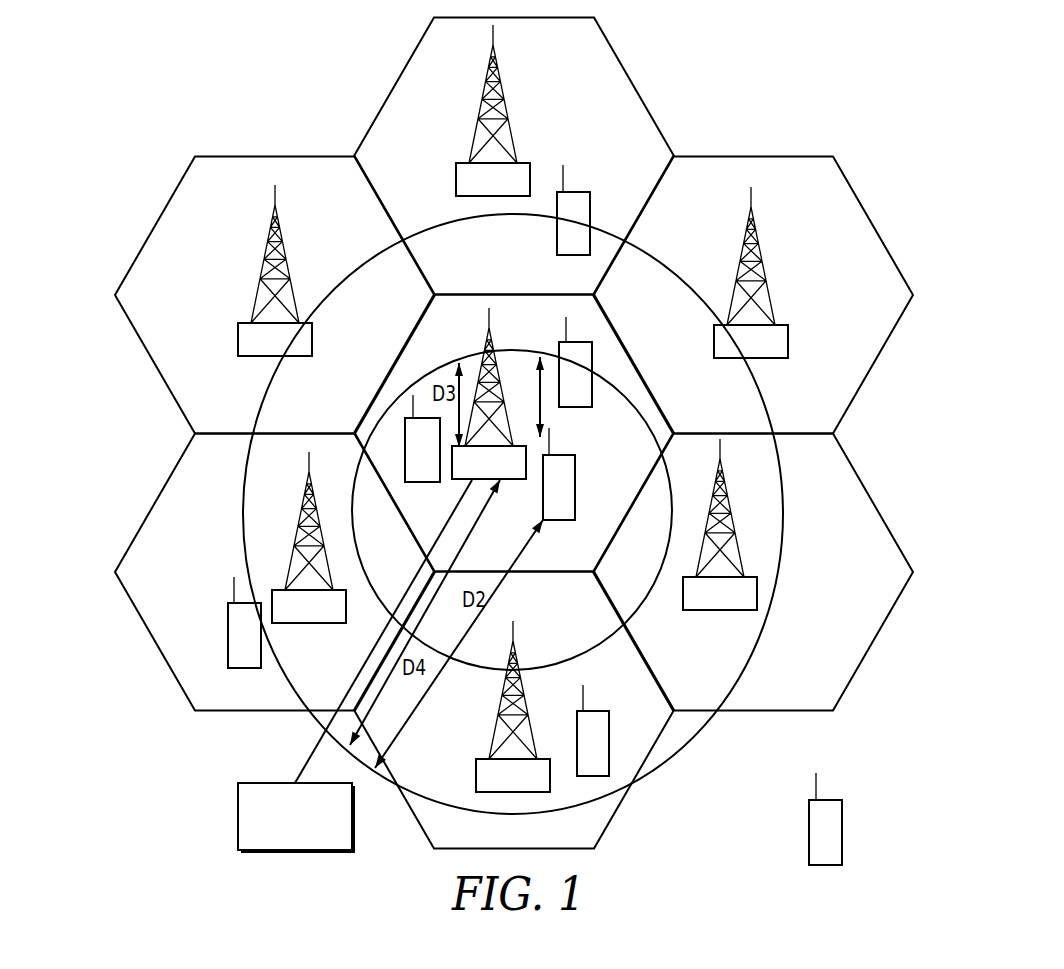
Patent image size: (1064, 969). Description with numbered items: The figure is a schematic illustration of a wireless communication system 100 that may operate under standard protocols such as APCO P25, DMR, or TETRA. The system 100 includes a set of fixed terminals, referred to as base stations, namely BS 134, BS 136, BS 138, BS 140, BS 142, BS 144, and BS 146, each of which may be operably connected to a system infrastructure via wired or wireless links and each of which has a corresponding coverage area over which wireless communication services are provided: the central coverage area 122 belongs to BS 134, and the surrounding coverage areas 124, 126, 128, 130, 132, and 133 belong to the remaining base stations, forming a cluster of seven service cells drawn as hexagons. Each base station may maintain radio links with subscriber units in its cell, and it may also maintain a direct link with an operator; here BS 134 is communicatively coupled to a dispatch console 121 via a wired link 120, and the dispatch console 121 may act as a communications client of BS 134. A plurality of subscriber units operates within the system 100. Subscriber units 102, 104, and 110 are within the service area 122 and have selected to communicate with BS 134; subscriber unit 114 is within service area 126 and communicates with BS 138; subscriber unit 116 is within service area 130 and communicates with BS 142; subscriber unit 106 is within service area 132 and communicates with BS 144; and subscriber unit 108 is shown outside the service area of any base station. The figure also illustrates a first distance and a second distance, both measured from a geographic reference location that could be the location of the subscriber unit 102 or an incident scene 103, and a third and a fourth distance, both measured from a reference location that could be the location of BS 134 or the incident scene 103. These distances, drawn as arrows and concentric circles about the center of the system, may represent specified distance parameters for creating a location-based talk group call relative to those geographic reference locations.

The wireless communication system 100 is at (1046, 798).
The subscriber unit 102 is at (560, 452).
The incident scene 103 is at (538, 437).
The subscriber unit 104 is at (562, 340).
The subscriber unit 106 is at (592, 710).
The subscriber unit 108 is at (823, 799).
The subscriber unit 110 is at (405, 425).
The subscriber unit 114 is at (572, 258).
The subscriber unit 116 is at (228, 635).
The wired link 120 is at (315, 747).
The dispatch console 121 is at (253, 782).
The coverage area 122 is at (627, 502).
The coverage area 124 is at (872, 222).
The coverage area 126 is at (630, 83).
The coverage area 128 is at (158, 221).
The coverage area 130 is at (155, 497).
The coverage area 132 is at (418, 827).
The coverage area 133 is at (875, 497).
The base station 134 is at (462, 482).
The base station 136 is at (747, 240).
The base station 138 is at (520, 161).
The base station 140 is at (262, 265).
The base station 142 is at (310, 623).
The base station 144 is at (483, 760).
The base station 146 is at (722, 612).